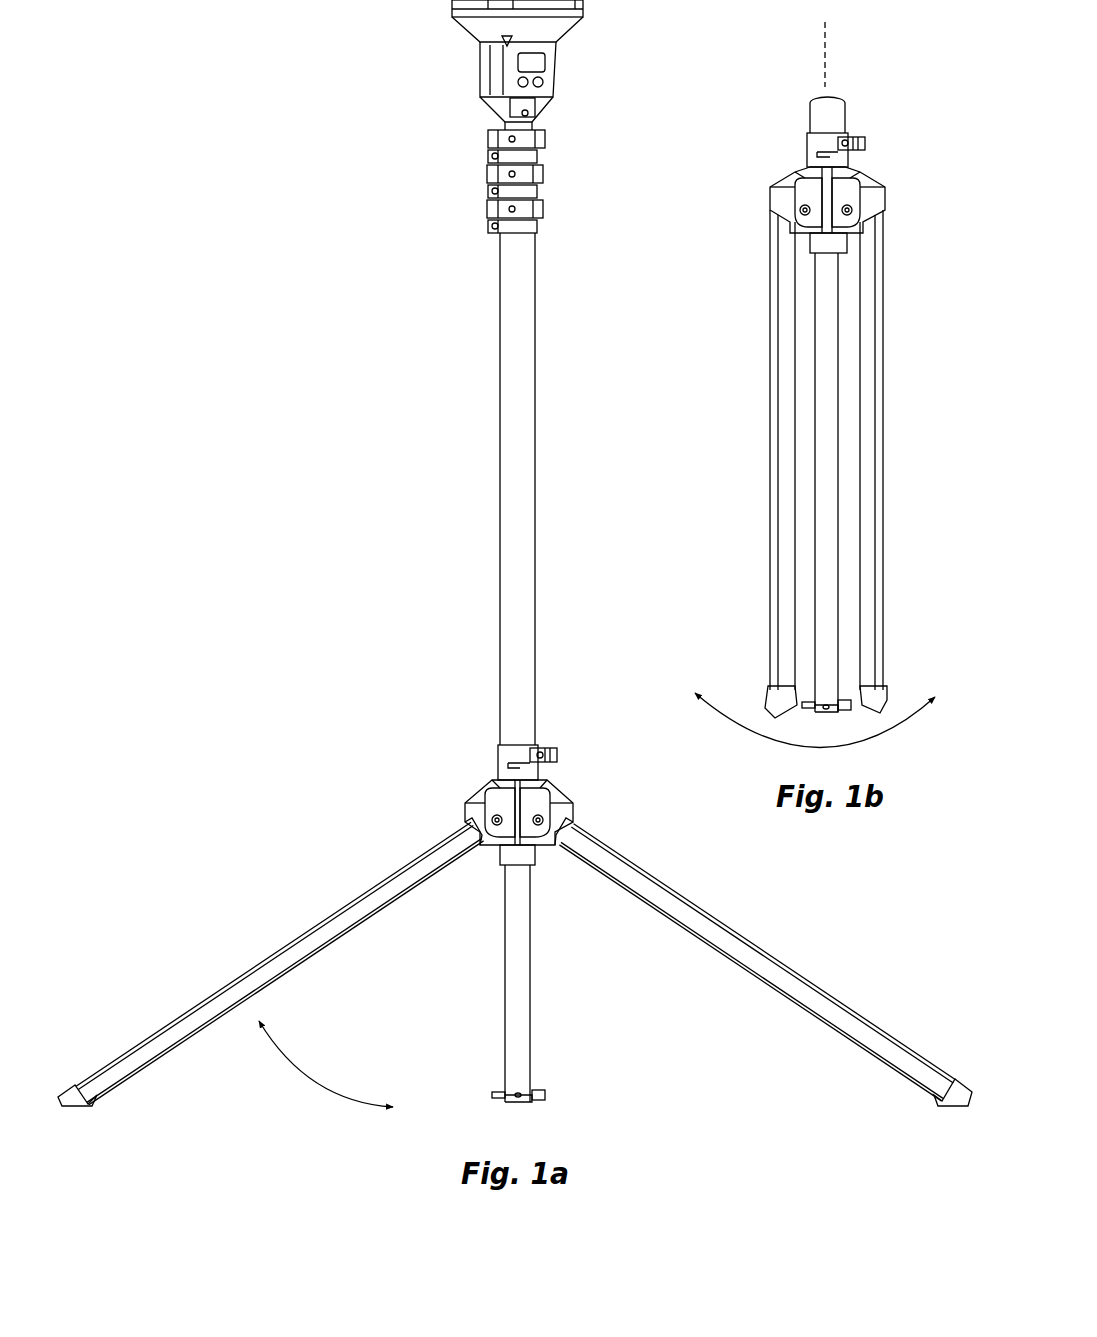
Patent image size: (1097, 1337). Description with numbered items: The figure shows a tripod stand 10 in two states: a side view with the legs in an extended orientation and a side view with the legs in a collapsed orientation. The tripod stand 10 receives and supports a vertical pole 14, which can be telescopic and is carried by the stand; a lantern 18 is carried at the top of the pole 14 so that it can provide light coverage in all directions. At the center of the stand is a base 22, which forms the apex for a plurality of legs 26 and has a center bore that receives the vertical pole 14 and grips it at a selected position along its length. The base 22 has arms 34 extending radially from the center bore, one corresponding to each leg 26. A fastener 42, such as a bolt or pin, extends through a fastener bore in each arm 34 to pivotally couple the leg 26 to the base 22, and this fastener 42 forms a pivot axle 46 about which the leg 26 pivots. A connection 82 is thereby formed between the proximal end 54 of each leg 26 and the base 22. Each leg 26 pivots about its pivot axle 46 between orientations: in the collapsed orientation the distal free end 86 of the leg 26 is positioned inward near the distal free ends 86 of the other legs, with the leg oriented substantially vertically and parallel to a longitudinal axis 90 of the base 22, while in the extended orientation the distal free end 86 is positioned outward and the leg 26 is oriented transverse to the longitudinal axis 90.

In FIG. 1A, the tripod stand 10 is at (287, 915).
In FIG. 1B, the tripod stand 10 is at (752, 420).
In FIG. 1A, the vertical pole 14 is at (510, 472).
In FIG. 1B, the vertical pole 14 is at (840, 118).
In FIG. 1A, the lantern 18 is at (493, 61).
In FIG. 1A, the base 22 is at (478, 795).
In FIG. 1B, the base 22 is at (795, 180).
In FIG. 1A, the leg 26 is at (770, 968).
In FIG. 1B, the leg 26 is at (868, 515).
In FIG. 1A, the arm 34 is at (560, 800).
In FIG. 1B, the arm 34 is at (865, 180).
In FIG. 1A, the fastener 42 is at (538, 833).
In FIG. 1B, the fastener 42 is at (848, 218).
In FIG. 1A, the pivot axle 46 is at (497, 833).
In FIG. 1B, the pivot axle 46 is at (805, 218).
In FIG. 1A, the proximal end 54 is at (432, 853).
In FIG. 1B, the proximal end 54 is at (772, 225).
In FIG. 1A, the connection 82 is at (583, 810).
In FIG. 1B, the connection 82 is at (892, 200).
In FIG. 1A, the distal free end 86 is at (935, 1085).
In FIG. 1B, the distal free end 86 is at (880, 670).
In FIG. 1B, the longitudinal axis 90 is at (826, 45).